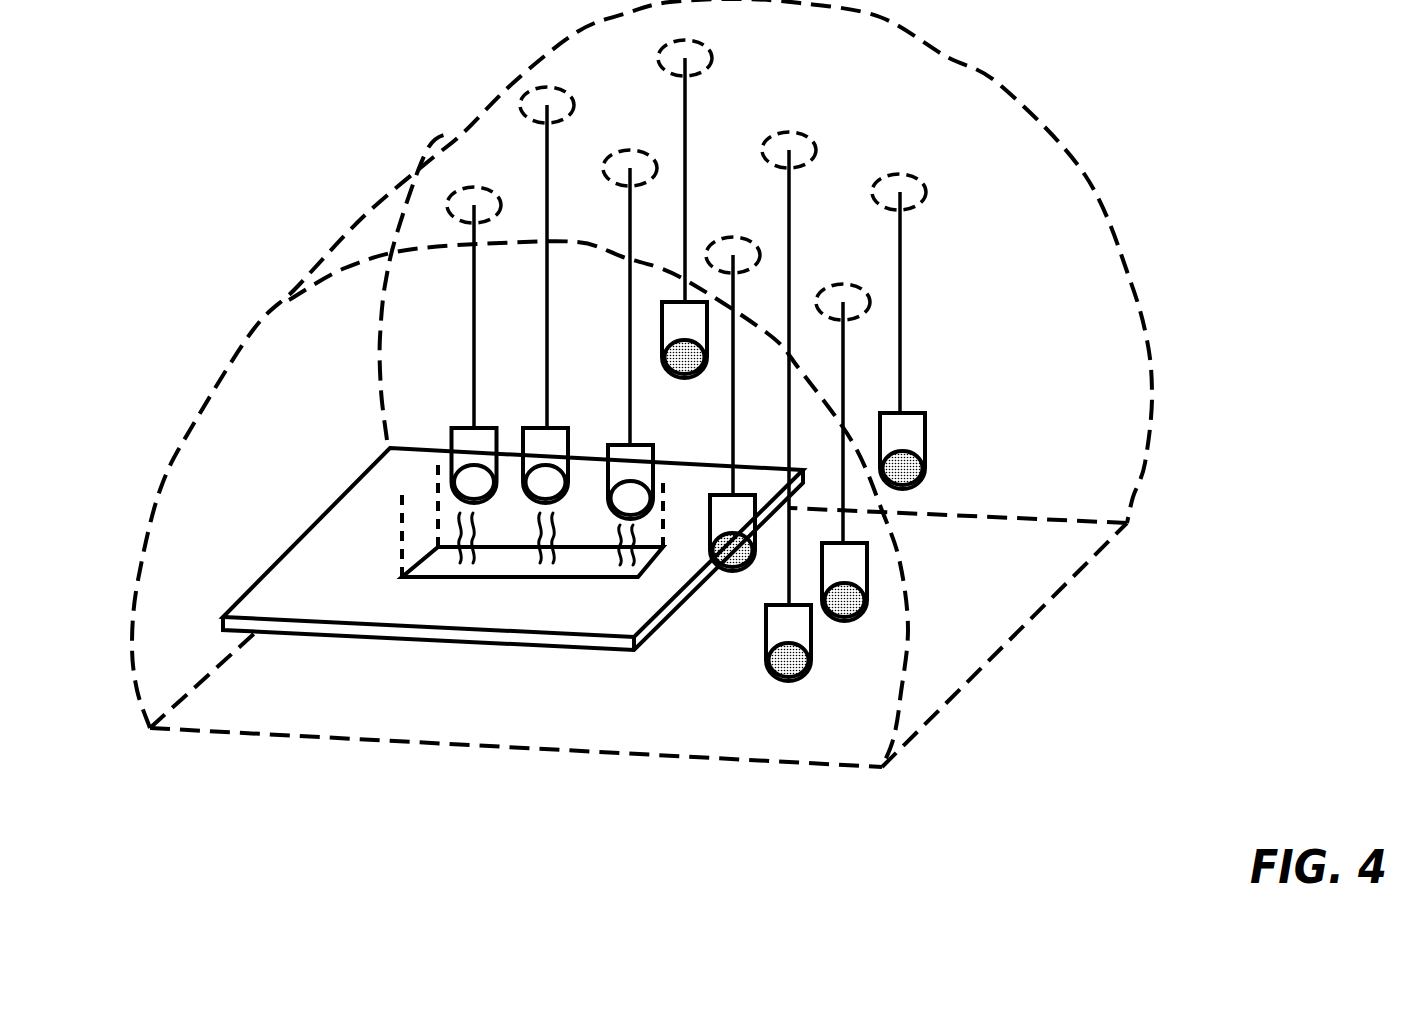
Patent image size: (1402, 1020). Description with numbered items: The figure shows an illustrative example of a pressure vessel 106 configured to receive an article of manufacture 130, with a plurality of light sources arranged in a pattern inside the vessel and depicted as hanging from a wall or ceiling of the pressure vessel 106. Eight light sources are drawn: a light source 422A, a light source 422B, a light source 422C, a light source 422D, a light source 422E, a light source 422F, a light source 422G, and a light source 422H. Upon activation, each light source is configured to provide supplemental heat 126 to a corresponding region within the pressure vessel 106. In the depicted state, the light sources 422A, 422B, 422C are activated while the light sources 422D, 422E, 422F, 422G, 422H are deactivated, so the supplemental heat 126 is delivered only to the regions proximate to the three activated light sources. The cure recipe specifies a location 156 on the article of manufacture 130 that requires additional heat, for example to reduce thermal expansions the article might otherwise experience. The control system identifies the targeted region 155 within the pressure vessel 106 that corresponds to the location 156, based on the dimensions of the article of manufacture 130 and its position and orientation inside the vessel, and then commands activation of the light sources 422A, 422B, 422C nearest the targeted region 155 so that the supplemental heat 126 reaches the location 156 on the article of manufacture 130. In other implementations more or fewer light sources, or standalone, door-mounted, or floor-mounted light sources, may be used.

The pressure vessel 106 is at (1203, 72).
The article of manufacture 130 is at (367, 497).
The targeted region 155 is at (400, 543).
The location 156 is at (500, 578).
The supplemental heat 126 is at (448, 536).
The light source 422A is at (463, 427).
The light source 422B is at (540, 427).
The light source 422C is at (623, 443).
The light source 422D is at (686, 380).
The light source 422E is at (732, 573).
The light source 422F is at (777, 680).
The light source 422G is at (841, 622).
The light source 422H is at (913, 412).